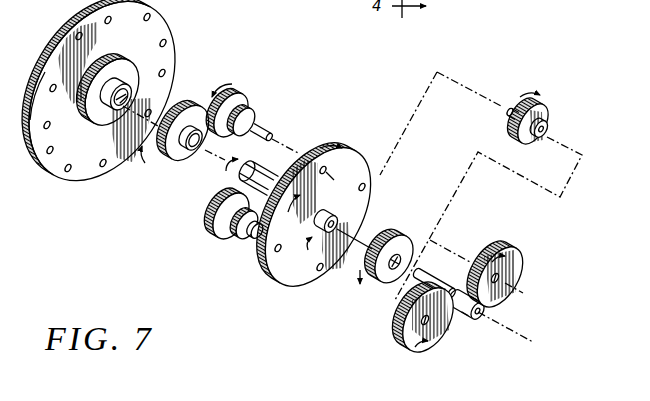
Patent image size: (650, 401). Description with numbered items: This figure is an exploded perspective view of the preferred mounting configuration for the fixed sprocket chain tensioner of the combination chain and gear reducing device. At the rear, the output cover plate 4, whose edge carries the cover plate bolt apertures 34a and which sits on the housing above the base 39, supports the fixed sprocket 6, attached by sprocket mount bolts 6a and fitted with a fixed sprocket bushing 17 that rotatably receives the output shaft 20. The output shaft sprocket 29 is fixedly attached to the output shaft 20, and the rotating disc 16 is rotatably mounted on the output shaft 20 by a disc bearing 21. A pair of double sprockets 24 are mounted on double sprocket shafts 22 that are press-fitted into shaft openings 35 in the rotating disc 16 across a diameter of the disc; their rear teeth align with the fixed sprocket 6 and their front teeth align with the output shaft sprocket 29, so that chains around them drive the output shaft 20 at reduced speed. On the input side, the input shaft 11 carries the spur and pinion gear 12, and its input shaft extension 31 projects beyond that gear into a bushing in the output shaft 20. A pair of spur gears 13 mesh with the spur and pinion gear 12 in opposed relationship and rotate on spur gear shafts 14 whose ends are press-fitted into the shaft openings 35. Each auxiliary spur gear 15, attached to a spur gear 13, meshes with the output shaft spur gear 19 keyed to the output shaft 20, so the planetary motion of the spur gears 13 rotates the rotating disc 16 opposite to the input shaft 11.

The output cover plate 4 is at (161, 24).
The cover plate bolt apertures 34a is at (88, 14).
The fixed sprocket 6 is at (146, 99).
The sprocket mount bolts 6a is at (138, 96).
The fixed sprocket bushing 17 is at (125, 111).
The output shaft sprocket 29 is at (183, 104).
The double sprockets 24 is at (263, 111).
The double sprocket shafts 22 is at (262, 124).
The output shaft 20 is at (237, 162).
The rotating disc 16 is at (362, 160).
The shaft openings 35 is at (336, 150).
The disc bearing 21 is at (305, 248).
The output shaft spur gear 19 is at (407, 243).
The input shaft extension 31 is at (447, 258).
The spur and pinion gear 12 is at (455, 282).
The input shaft 11 is at (470, 312).
The spur gears 13 is at (520, 263).
The spur gear shafts 14 is at (548, 122).
The auxiliary spur gear 15 is at (530, 146).
The base 39 is at (649, 6).